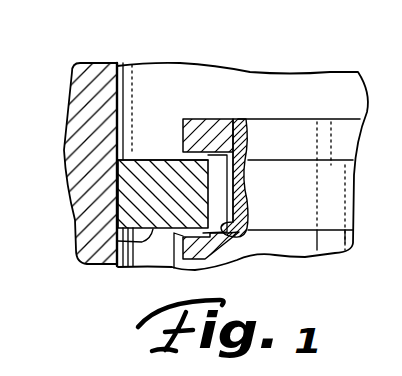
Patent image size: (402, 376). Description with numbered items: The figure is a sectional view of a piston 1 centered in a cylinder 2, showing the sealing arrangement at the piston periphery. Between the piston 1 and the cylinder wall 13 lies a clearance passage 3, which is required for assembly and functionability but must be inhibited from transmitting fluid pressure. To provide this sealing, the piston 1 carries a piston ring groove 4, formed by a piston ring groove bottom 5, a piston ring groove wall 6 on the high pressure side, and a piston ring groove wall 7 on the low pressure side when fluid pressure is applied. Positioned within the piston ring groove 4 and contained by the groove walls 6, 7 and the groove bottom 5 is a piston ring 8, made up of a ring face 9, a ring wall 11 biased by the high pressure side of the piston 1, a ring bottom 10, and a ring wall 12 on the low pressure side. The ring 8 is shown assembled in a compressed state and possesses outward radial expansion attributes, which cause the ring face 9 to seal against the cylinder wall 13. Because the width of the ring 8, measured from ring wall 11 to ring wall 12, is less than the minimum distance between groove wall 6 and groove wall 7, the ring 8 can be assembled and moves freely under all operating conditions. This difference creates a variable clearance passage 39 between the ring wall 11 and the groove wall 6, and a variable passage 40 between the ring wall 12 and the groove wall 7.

The piston 1 is at (338, 205).
The cylinder 2 is at (282, 88).
The clearance passage 3 is at (83, 255).
The piston ring groove 4 is at (212, 211).
The piston ring groove bottom 5 is at (229, 186).
The piston ring groove wall 6 is at (222, 152).
The piston ring groove wall 7 is at (210, 229).
The piston ring 8 is at (131, 192).
The ring face 9 is at (115, 166).
The ring bottom 10 is at (242, 166).
The ring wall 11 is at (160, 158).
The ring wall 12 is at (118, 241).
The cylinder wall 13 is at (90, 68).
The variable clearance passage 39 is at (194, 152).
The variable passage 40 is at (174, 268).